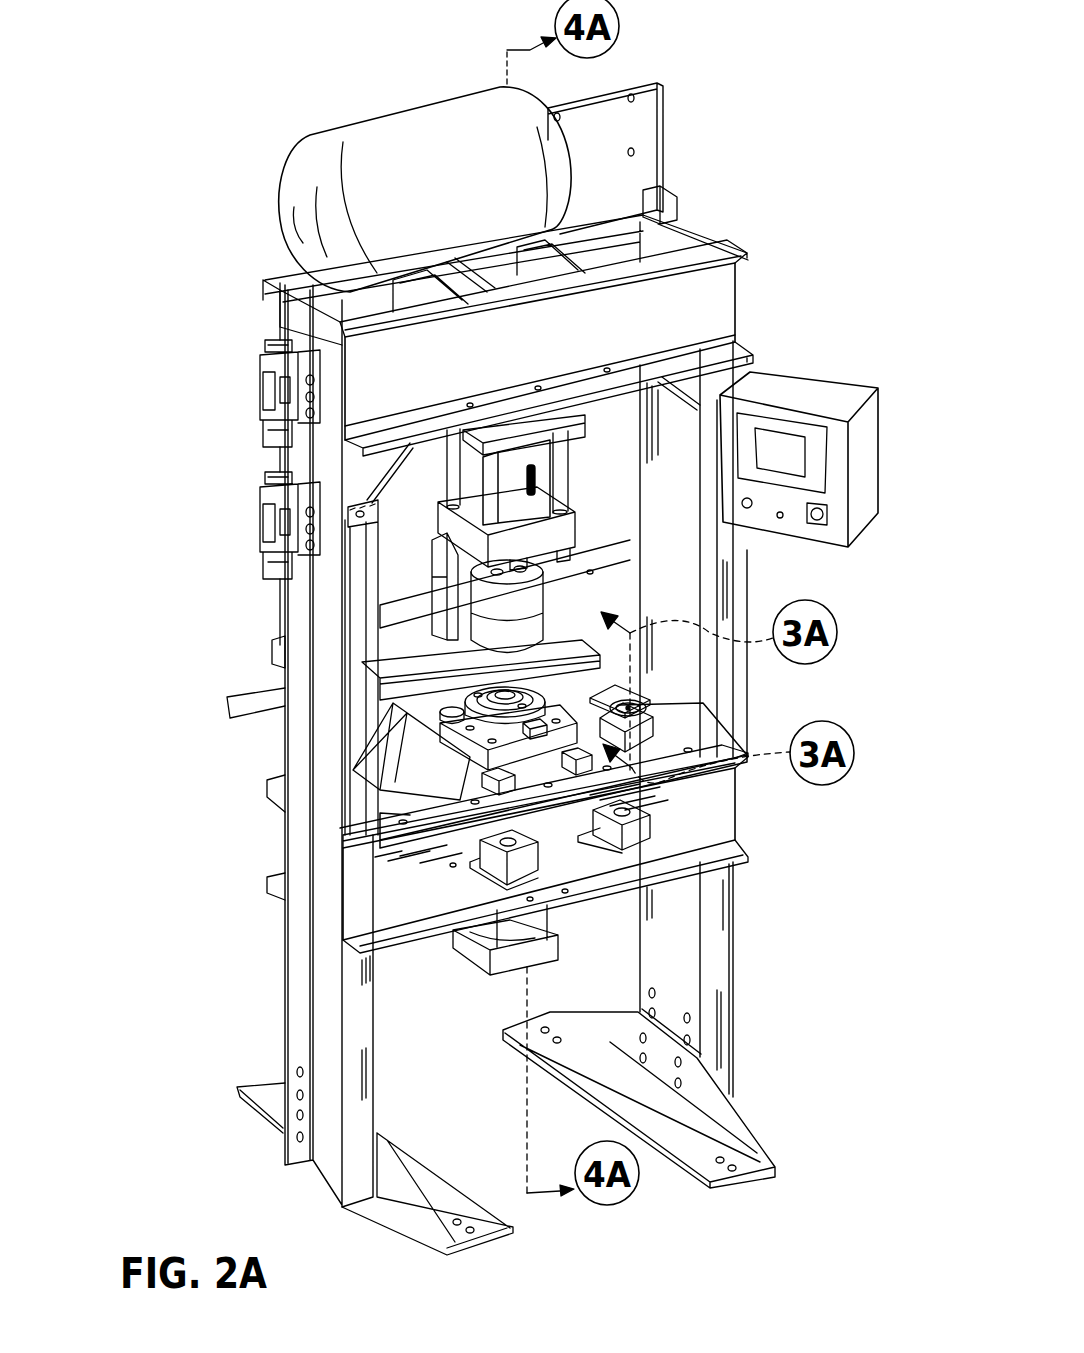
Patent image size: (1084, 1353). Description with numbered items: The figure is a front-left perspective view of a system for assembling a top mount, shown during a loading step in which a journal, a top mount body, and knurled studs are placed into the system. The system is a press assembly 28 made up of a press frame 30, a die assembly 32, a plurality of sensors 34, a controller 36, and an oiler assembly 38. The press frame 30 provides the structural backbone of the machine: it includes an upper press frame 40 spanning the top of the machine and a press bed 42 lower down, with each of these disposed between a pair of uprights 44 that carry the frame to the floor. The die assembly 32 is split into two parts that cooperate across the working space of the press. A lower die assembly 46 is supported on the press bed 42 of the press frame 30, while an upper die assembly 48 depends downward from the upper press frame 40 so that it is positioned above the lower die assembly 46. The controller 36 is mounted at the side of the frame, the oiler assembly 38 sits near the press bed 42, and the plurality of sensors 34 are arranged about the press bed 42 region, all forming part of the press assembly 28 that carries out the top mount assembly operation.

The press assembly 28 is at (217, 69).
The press frame 30 is at (267, 278).
The die assembly 32 is at (578, 534).
The plurality of sensors 34 is at (655, 830).
The controller 36 is at (846, 380).
The oiler assembly 38 is at (657, 717).
The upper press frame 40 is at (704, 262).
The press bed 42 is at (678, 868).
The uprights 44 is at (285, 972).
The lower die assembly 46 is at (500, 755).
The upper die assembly 48 is at (510, 632).